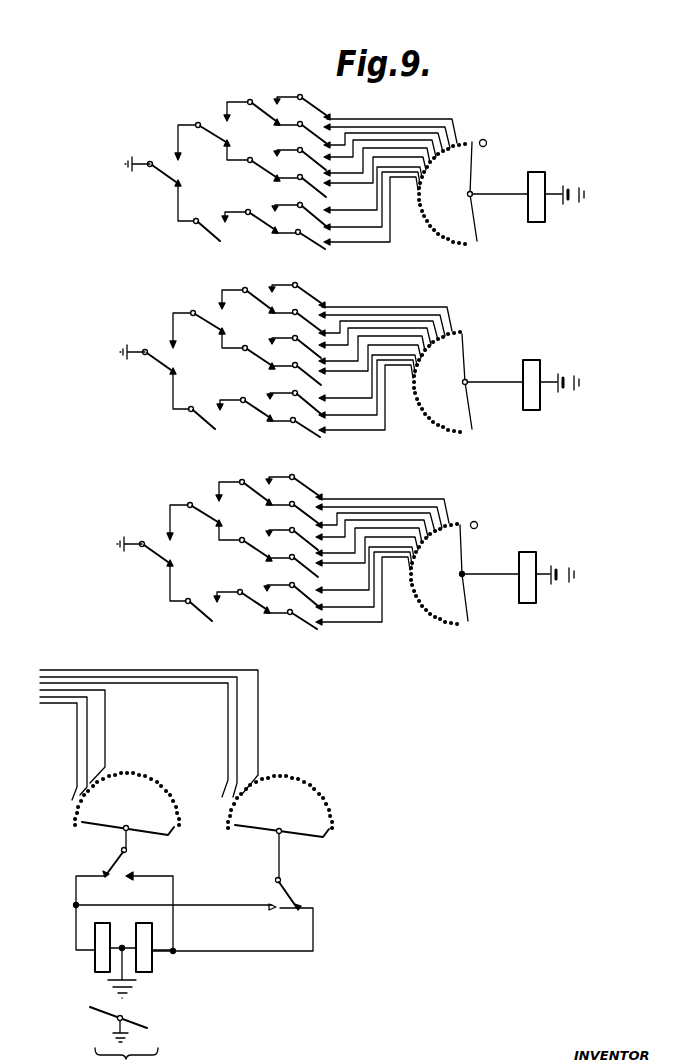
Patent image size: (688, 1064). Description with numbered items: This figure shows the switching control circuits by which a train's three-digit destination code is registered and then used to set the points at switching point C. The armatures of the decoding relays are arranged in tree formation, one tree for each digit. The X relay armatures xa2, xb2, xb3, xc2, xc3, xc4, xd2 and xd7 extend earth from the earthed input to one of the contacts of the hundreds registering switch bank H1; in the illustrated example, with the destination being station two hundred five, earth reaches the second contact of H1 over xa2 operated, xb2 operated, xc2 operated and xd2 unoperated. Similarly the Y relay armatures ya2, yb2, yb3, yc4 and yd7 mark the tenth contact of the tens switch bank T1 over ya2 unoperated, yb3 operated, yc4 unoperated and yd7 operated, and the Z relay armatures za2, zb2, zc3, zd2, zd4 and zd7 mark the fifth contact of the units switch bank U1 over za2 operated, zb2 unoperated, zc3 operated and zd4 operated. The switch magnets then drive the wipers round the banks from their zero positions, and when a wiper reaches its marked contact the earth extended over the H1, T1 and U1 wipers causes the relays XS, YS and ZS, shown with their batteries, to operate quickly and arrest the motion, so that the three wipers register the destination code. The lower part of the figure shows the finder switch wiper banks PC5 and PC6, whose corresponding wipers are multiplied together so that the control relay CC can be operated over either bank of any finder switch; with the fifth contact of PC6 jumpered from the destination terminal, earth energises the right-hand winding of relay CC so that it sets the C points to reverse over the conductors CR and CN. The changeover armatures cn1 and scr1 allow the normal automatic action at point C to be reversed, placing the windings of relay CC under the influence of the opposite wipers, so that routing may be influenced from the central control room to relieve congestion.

The armature xa2 is at (153, 164).
The armature xb2 is at (210, 125).
The armature xb3 is at (202, 236).
The armature xc2 is at (262, 102).
The armature xc3 is at (264, 158).
The armature xc4 is at (254, 232).
The armature xd2 is at (331, 108).
The armature xd7 is at (330, 244).
The hundreds registering switch bank H1 is at (453, 192).
The relay XS is at (577, 243).
The armature ya2 is at (164, 359).
The armature yb2 is at (206, 309).
The armature yb3 is at (210, 429).
The armature yc4 is at (258, 400).
The armature yd7 is at (325, 433).
The tens switch bank T1 is at (443, 382).
The relay YS is at (551, 405).
The armature za2 is at (162, 551).
The armature zb2 is at (201, 504).
The armature zc3 is at (255, 539).
The armature zd2 is at (321, 486).
The armature zd4 is at (321, 543).
The armature zd7 is at (320, 628).
The units switch bank U1 is at (444, 573).
The relay ZS is at (546, 597).
The finder switch wiper bank PC5 is at (127, 804).
The finder switch wiper bank PC6 is at (280, 806).
The armature cn1 is at (134, 863).
The armature scr1 is at (310, 894).
The control relay CC is at (123, 952).
The conductor CR is at (102, 1034).
The conductor CN is at (148, 1034).